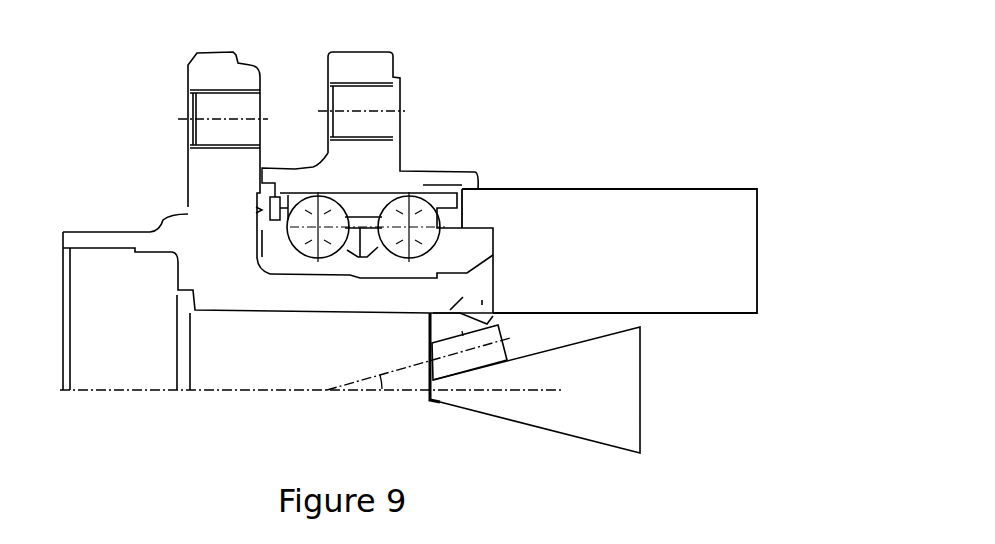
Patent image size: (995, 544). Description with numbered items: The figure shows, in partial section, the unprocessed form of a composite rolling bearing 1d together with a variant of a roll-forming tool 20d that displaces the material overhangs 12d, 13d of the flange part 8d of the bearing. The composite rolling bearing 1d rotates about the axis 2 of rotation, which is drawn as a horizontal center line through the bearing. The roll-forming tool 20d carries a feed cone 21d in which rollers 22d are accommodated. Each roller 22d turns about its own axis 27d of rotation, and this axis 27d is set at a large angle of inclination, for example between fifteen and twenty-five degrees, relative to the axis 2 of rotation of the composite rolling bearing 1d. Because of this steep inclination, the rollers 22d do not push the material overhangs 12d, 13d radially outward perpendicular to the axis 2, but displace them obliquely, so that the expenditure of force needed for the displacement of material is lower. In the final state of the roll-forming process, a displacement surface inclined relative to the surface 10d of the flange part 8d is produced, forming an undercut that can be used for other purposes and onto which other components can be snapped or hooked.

The composite rolling bearing 1d is at (617, 50).
The axis of rotation 2 is at (263, 393).
The flange part 8d is at (252, 303).
The surface of the flange part 10d is at (307, 315).
The material overhang 12d is at (485, 315).
The material overhang 13d is at (450, 310).
The roll-forming tool 20d is at (635, 170).
The feed cone 21d is at (552, 423).
The roller 22d is at (450, 370).
The axis of rotation of the roller 27d is at (387, 370).